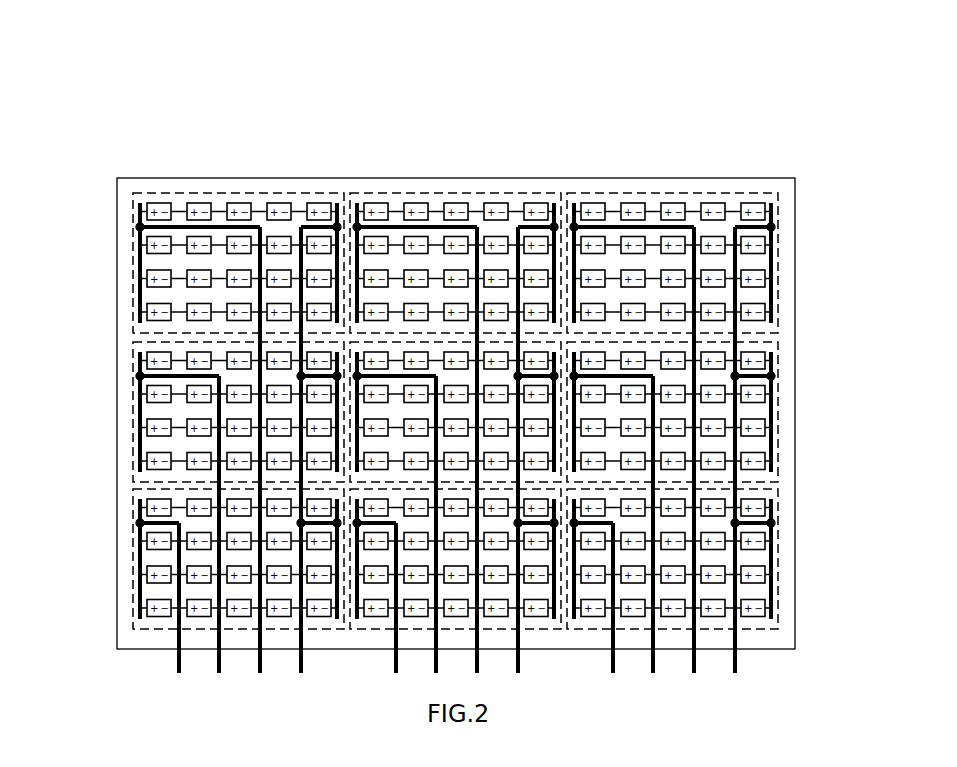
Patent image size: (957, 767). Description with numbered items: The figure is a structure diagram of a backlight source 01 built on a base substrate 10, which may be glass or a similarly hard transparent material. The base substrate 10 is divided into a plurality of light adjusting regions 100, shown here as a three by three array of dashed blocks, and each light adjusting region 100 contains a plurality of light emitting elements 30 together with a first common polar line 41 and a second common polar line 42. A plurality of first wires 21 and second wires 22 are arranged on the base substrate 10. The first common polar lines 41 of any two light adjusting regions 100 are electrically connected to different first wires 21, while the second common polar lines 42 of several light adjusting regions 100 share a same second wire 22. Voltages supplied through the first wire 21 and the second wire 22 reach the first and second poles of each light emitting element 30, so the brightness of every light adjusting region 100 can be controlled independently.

The backlight source 01 is at (117, 41).
The base substrate 10 is at (786, 262).
The light adjusting region 100 is at (786, 443).
The light emitting element 30 is at (165, 206).
The first wire 21 is at (214, 225).
The second wire 22 is at (312, 225).
The first common polar line 41 is at (138, 256).
The second common polar line 42 is at (339, 206).